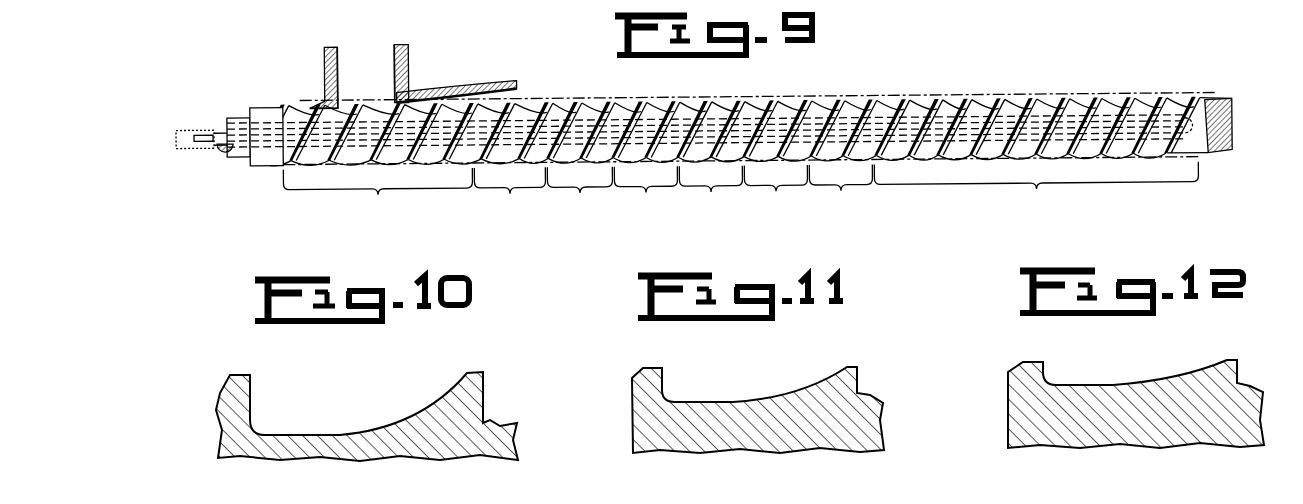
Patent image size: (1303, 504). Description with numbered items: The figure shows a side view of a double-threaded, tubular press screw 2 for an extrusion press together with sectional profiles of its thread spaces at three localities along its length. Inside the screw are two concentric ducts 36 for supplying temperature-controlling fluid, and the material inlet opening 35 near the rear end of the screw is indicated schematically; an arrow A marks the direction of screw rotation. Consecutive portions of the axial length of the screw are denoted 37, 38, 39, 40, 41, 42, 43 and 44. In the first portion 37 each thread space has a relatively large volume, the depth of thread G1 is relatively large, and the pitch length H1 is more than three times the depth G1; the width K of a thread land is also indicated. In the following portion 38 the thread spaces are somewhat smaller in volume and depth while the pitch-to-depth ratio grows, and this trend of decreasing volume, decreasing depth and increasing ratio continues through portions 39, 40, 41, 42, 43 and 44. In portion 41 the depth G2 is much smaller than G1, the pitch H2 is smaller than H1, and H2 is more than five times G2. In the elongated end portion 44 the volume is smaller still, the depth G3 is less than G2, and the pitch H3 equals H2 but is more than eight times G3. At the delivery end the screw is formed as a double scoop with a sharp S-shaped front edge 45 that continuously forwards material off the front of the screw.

In FIG. 9, the press screw 2 is at (850, 109).
In FIG. 9, the material inlet opening 35 is at (388, 68).
In FIG. 9, the concentric ducts 36 is at (203, 126).
In FIG. 9, the first screw portion 37 is at (377, 193).
In FIG. 9, the second screw portion 38 is at (509, 192).
In FIG. 9, the third screw portion 39 is at (579, 192).
In FIG. 9, the fourth screw portion 40 is at (645, 191).
In FIG. 9, the fifth screw portion 41 is at (710, 191).
In FIG. 9, the sixth screw portion 42 is at (775, 190).
In FIG. 9, the seventh screw portion 43 is at (840, 189).
In FIG. 9, the elongated end portion 44 is at (1036, 188).
In FIG. 9, the S-shaped front edge 45 is at (1234, 121).
In FIG. 9, the direction of screw rotation A is at (934, 174).
In FIG. 10, the pitch length in portion 37 H1 is at (470, 357).
In FIG. 10, the depth of thread in portion 37 G1 is at (250, 375).
In FIG. 10, the peripheral width of cylindrical wall portions K is at (476, 358).
In FIG. 11, the pitch length in portion 41 H2 is at (845, 352).
In FIG. 11, the depth of thread in portion 41 G2 is at (663, 368).
In FIG. 12, the pitch length in end portion 44 H3 is at (1225, 346).
In FIG. 12, the depth of thread in end portion 44 G3 is at (1043, 362).